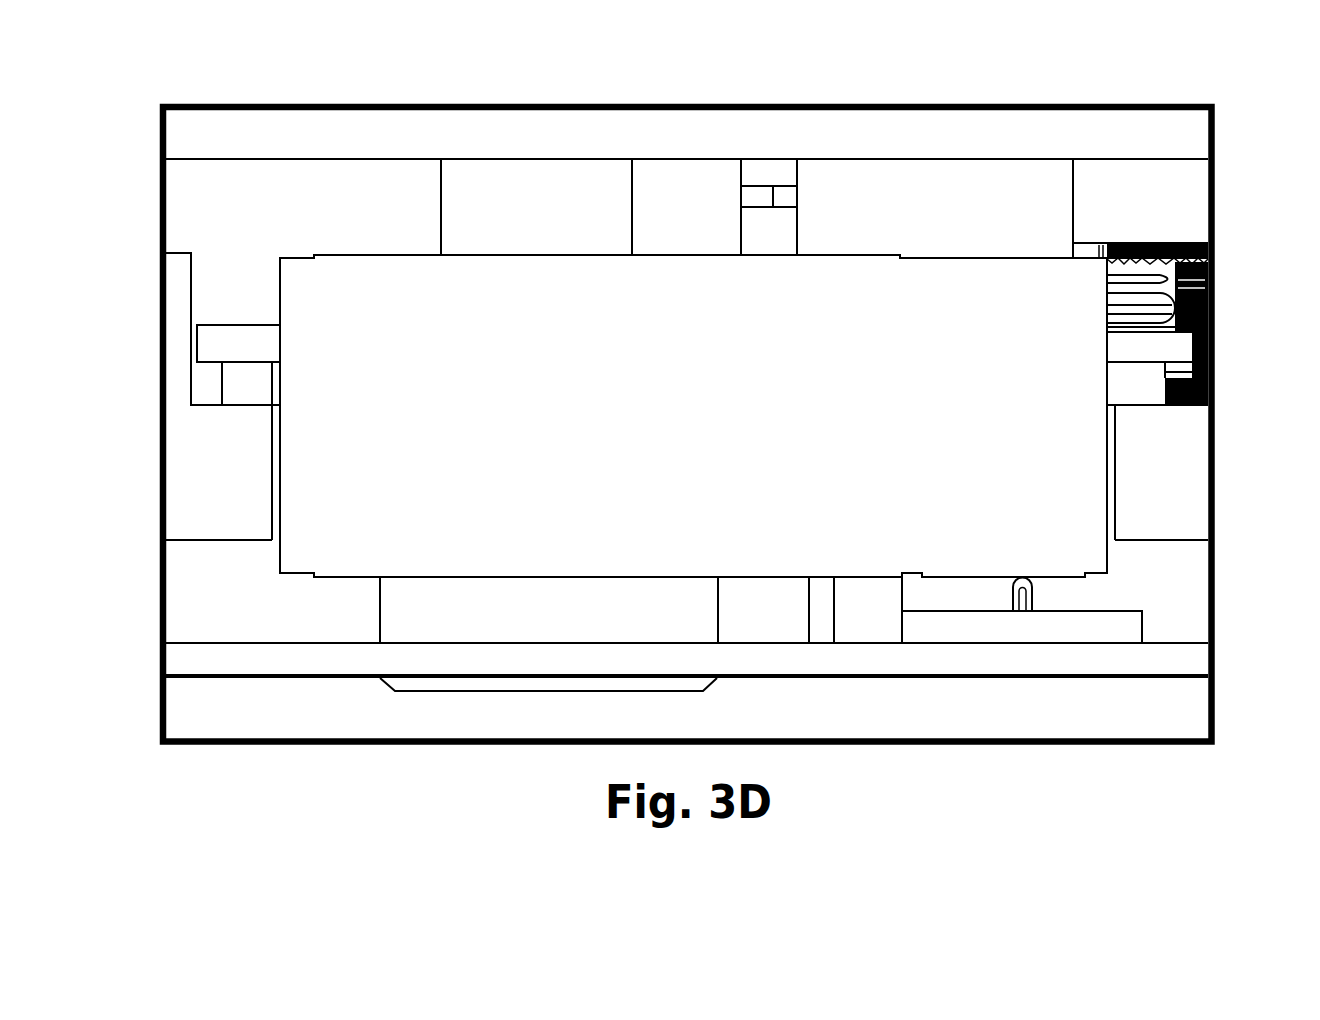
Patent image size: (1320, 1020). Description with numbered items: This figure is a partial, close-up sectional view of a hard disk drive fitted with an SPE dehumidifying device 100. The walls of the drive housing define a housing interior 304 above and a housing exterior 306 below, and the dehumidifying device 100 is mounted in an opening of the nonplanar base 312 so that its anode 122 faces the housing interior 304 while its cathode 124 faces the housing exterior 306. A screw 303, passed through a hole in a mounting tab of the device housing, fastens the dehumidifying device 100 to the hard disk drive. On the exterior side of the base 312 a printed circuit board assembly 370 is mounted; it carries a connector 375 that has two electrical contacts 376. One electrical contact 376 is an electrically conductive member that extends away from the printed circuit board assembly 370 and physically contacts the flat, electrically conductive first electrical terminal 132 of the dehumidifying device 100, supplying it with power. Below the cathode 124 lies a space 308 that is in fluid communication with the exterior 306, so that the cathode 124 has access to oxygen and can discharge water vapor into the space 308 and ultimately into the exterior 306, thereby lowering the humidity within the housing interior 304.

The dehumidifying device 100 is at (868, 407).
The anode 122 is at (380, 248).
The cathode 124 is at (557, 583).
The first electrical terminal 132 is at (970, 598).
The screw 303 is at (1049, 341).
The housing interior 304 is at (1063, 144).
The housing exterior 306 is at (328, 721).
The space 308 is at (275, 618).
The base 312 is at (210, 547).
The printed circuit board assembly 370 is at (1197, 661).
The connector 375 is at (1133, 627).
The electrical contact 376 is at (1033, 598).